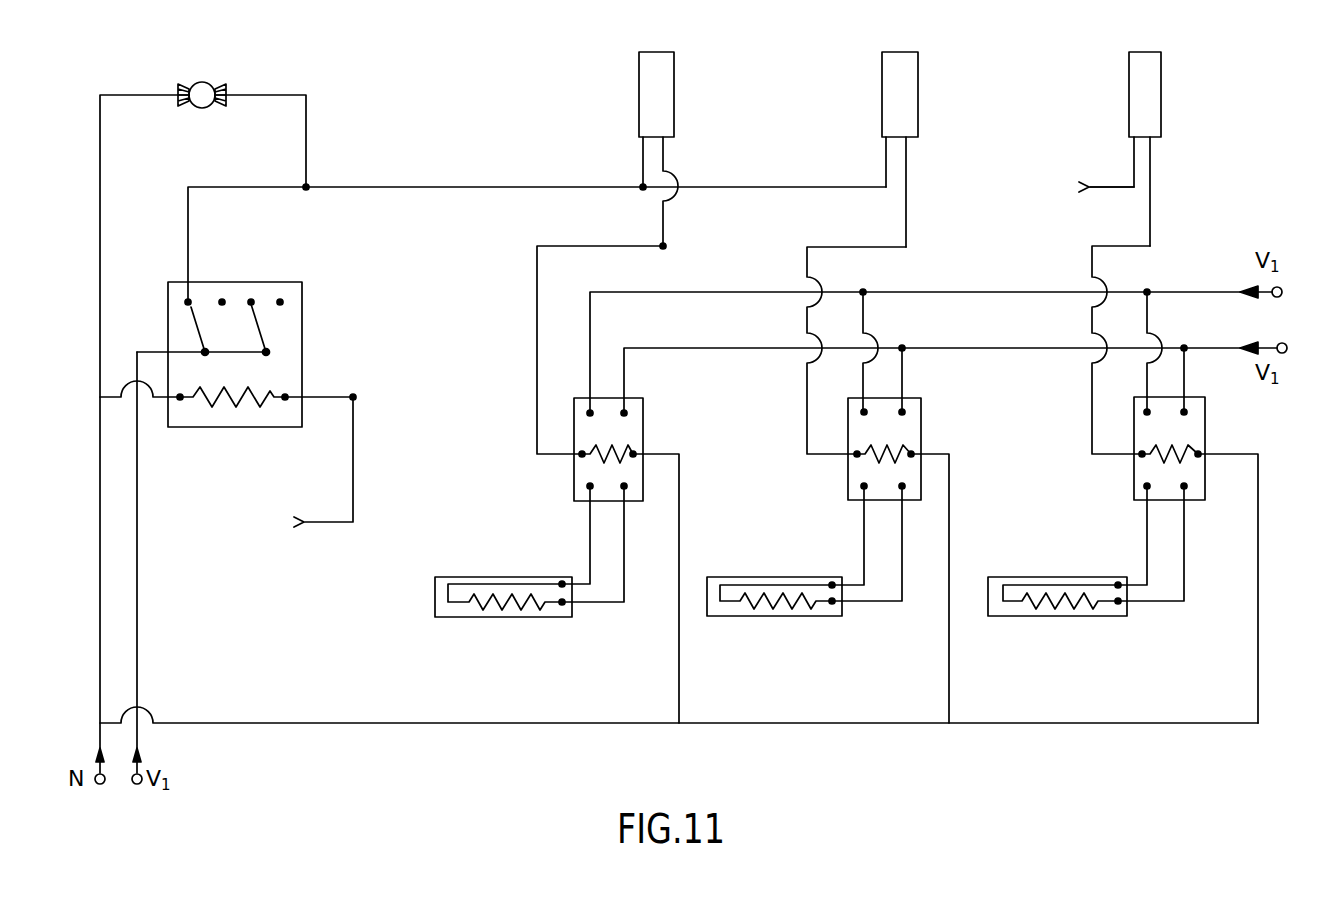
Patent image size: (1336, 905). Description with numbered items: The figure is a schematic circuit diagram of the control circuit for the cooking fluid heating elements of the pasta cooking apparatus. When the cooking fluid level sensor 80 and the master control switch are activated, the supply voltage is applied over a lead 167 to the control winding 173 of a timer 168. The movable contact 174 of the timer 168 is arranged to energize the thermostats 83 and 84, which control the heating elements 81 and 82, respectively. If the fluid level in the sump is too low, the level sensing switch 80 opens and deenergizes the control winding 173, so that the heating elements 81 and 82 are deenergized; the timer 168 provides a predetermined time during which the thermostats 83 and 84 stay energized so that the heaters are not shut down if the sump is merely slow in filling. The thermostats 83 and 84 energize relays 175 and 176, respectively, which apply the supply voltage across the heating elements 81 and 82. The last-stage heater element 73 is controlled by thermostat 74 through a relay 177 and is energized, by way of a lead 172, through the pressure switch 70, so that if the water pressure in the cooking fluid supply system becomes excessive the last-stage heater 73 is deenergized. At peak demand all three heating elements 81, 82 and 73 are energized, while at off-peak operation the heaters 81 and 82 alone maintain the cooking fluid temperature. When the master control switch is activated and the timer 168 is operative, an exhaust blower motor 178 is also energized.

The exhaust blower motor 178 is at (205, 82).
The timer 168 is at (304, 325).
The movable contact 174 is at (197, 325).
The control winding 173 is at (228, 402).
The fluid level sensor lead 167 is at (355, 463).
The cooking fluid level sensor 80 is at (261, 523).
The thermostat 83 is at (676, 91).
The thermostat 84 is at (920, 91).
The thermostat 74 is at (1163, 91).
The pressure switch lead 172 is at (1112, 190).
The pressure switch 70 is at (1006, 171).
The relay 175 is at (645, 427).
The relay 176 is at (923, 427).
The relay 177 is at (1207, 427).
The heating element 81 is at (516, 617).
The heating element 82 is at (795, 617).
The last-stage heater element 73 is at (1080, 617).